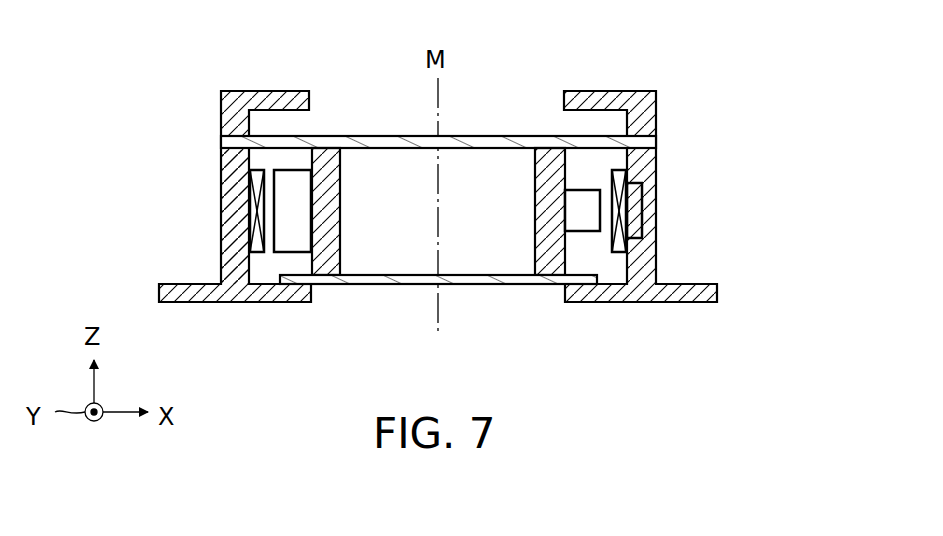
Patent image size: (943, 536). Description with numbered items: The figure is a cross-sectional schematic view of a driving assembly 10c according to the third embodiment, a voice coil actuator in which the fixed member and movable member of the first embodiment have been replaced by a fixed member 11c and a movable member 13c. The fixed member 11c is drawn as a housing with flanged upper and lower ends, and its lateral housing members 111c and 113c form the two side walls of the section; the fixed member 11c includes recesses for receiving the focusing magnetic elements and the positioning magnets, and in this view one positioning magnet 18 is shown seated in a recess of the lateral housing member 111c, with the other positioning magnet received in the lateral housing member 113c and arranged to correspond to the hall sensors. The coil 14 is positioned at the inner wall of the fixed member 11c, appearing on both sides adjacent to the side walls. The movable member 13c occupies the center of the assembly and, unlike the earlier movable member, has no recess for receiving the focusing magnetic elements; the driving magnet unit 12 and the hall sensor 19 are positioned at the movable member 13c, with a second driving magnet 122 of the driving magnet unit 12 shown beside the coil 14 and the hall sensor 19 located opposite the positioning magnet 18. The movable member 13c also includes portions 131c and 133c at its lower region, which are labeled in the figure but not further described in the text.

The driving assembly 10c is at (428, 167).
The fixed member 11c is at (220, 90).
The lateral housing member 111c is at (647, 255).
The lateral housing member 113c is at (233, 228).
The driving magnet unit 12 is at (240, 141).
The second driving magnet 122 is at (287, 167).
The movable member 13c is at (393, 280).
The base portion 131c is at (566, 262).
The base portion 133c is at (307, 262).
The coil 14 is at (262, 187).
The positioning magnet 18 is at (636, 229).
The hall sensor 19 is at (583, 202).